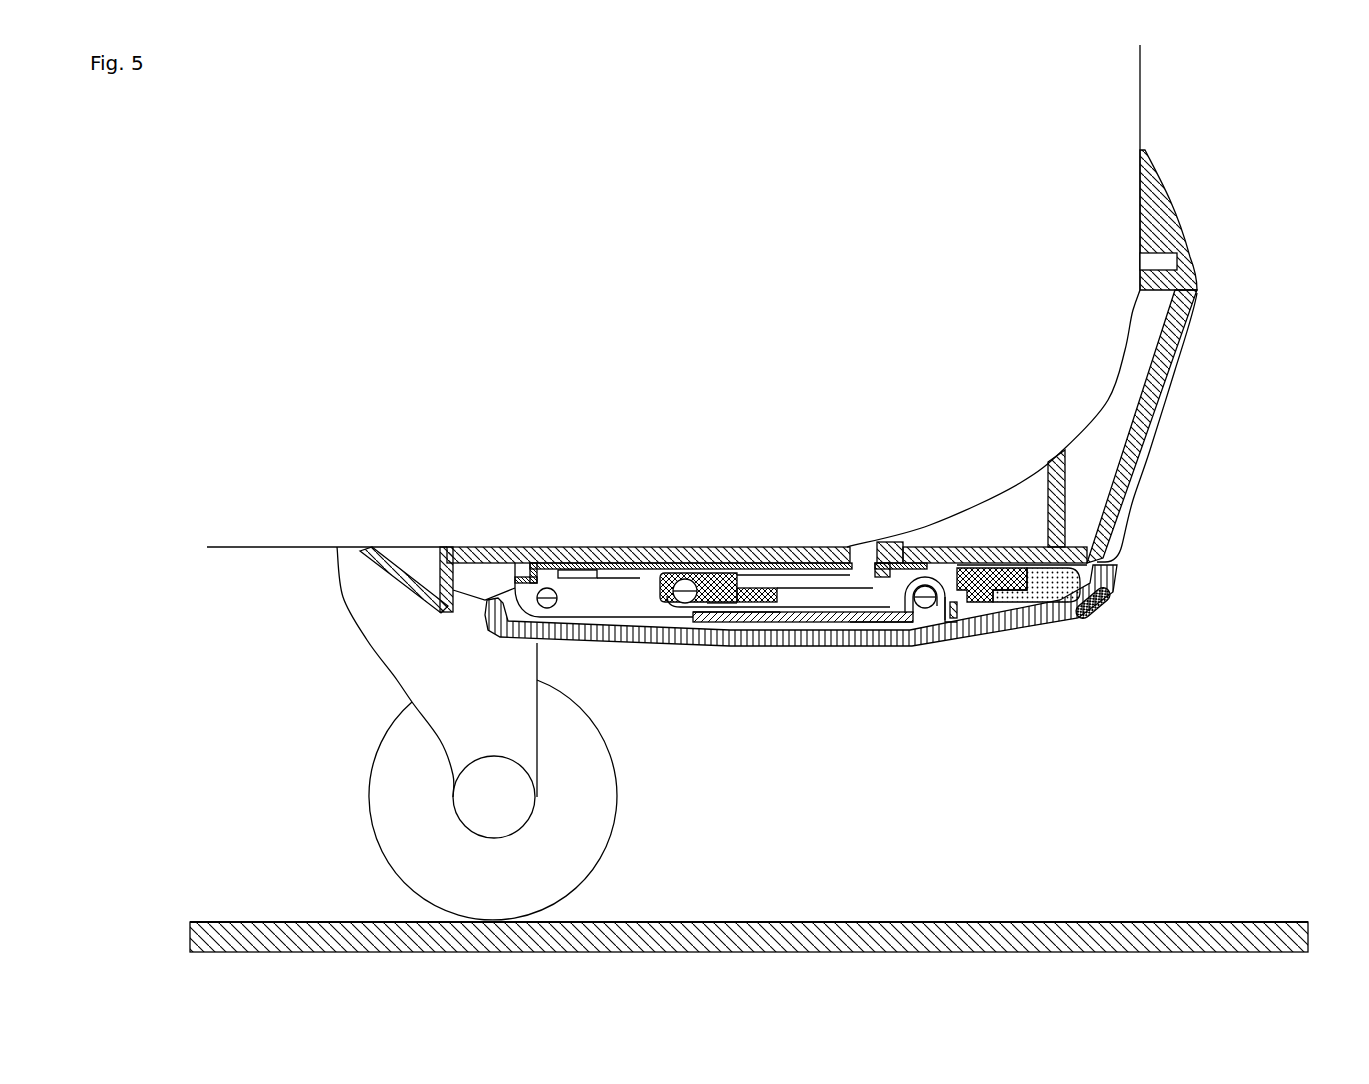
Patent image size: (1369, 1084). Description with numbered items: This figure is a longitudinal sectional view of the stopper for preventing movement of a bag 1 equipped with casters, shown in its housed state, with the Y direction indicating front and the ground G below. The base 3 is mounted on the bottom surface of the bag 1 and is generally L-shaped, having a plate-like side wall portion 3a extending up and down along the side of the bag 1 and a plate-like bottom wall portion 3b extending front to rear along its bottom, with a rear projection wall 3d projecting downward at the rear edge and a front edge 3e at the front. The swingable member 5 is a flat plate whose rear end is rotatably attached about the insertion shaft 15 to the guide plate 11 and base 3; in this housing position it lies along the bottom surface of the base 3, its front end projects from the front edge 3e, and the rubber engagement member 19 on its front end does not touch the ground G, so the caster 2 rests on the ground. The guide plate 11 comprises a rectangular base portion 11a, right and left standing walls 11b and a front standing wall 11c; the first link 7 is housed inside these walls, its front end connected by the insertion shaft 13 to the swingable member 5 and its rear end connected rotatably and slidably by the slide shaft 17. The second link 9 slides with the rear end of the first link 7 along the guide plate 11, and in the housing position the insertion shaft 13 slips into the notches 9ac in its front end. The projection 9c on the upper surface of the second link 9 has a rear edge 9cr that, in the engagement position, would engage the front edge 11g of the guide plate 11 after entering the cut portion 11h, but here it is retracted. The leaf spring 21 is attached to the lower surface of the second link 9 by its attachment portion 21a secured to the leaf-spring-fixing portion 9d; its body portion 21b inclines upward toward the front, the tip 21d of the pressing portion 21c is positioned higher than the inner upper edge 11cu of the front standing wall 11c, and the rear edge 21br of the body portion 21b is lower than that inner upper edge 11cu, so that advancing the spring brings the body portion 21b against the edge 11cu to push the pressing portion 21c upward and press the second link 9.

The bag 1 is at (1110, 120).
The caster 2 is at (368, 754).
The base 3 is at (1222, 231).
The side wall portion 3a is at (1158, 202).
The bottom wall portion 3b is at (487, 547).
The rear projection wall 3d is at (440, 584).
The front edge 3e is at (1090, 555).
The swingable member 5 is at (648, 653).
The first link 7 is at (722, 630).
The second link 9 is at (735, 565).
The projection 9c is at (860, 548).
The rear edge of projection 9cr is at (837, 547).
The leaf-spring-fixing portion 9d is at (720, 600).
The notch 9ac is at (946, 612).
The guide plate 11 is at (816, 552).
The base portion 11a is at (641, 547).
The standing wall 11b is at (617, 588).
The front standing wall 11c is at (957, 614).
The inner upper edge 11cu is at (963, 620).
The front edge of guide plate 11g is at (918, 560).
The cut portion 11h is at (941, 551).
The insertion shaft 13 is at (923, 610).
The insertion shaft 15 is at (550, 588).
The slide shaft 17 is at (713, 563).
The engagement member 19 is at (1103, 612).
The leaf spring 21 is at (847, 625).
The attachment portion 21a is at (755, 605).
The body portion 21b is at (860, 613).
The rear edge of body portion 21br is at (776, 618).
The pressing portion 21c is at (908, 615).
The tip of pressing portion 21d is at (953, 605).
The ground G is at (1095, 936).
The Y direction Y is at (1062, 764).